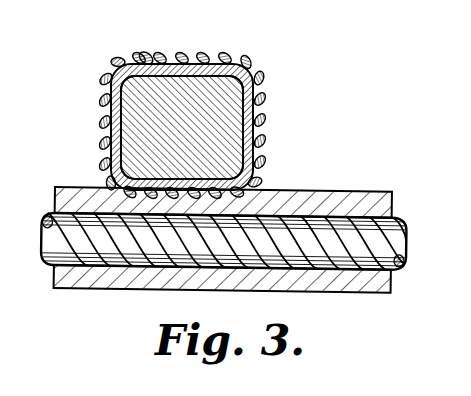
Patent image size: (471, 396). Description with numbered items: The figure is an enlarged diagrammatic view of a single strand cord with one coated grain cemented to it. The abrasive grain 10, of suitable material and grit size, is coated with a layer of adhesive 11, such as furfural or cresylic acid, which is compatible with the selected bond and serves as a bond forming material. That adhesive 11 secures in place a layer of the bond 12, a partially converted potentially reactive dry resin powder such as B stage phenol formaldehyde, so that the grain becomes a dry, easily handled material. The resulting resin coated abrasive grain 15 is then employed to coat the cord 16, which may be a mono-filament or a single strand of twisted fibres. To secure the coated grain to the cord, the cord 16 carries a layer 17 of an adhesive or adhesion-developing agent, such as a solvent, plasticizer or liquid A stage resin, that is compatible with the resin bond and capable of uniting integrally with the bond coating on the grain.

The abrasive grain 10 is at (227, 110).
The adhesive 11 is at (206, 60).
The bond 12 is at (103, 96).
The resin coated abrasive grain 15 is at (146, 54).
The cord 16 is at (42, 218).
The adhesive layer 17 is at (327, 192).